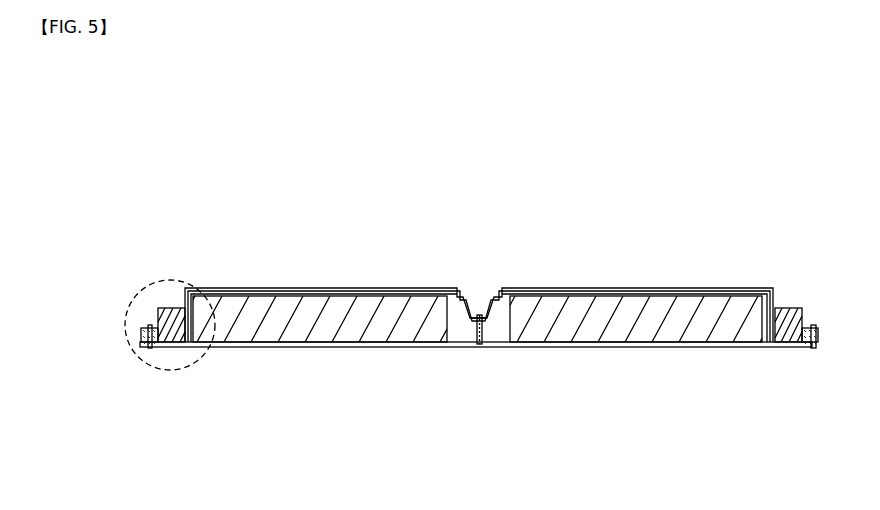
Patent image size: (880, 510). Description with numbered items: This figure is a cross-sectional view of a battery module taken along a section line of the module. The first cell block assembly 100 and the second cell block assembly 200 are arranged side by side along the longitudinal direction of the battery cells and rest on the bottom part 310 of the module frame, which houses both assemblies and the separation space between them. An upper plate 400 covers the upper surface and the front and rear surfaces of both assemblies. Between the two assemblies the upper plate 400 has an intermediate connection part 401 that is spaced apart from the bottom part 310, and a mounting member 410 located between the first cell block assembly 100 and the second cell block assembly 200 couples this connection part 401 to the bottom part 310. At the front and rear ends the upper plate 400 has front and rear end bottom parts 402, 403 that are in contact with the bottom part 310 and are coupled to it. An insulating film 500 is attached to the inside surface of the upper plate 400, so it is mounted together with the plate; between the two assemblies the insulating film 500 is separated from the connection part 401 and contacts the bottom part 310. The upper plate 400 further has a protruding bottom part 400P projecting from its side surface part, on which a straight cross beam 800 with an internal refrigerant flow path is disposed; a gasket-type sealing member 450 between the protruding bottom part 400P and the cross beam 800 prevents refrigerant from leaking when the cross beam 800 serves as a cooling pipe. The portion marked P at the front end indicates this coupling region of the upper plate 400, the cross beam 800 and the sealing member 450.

The first cell block assembly 100 is at (645, 325).
The second cell block assembly 200 is at (292, 333).
The bottom part 310 is at (405, 347).
The upper plate 400 is at (668, 284).
The protruding bottom part 400P is at (332, 67).
The intermediate connection part 401 is at (485, 344).
The front end bottom part 402 is at (160, 343).
The rear end bottom part 403 is at (795, 344).
The mounting member 410 is at (481, 314).
The sealing member 450 is at (814, 324).
The insulating film 500 is at (472, 345).
The cross beam 800 is at (178, 306).
The enlarged portion P is at (151, 281).